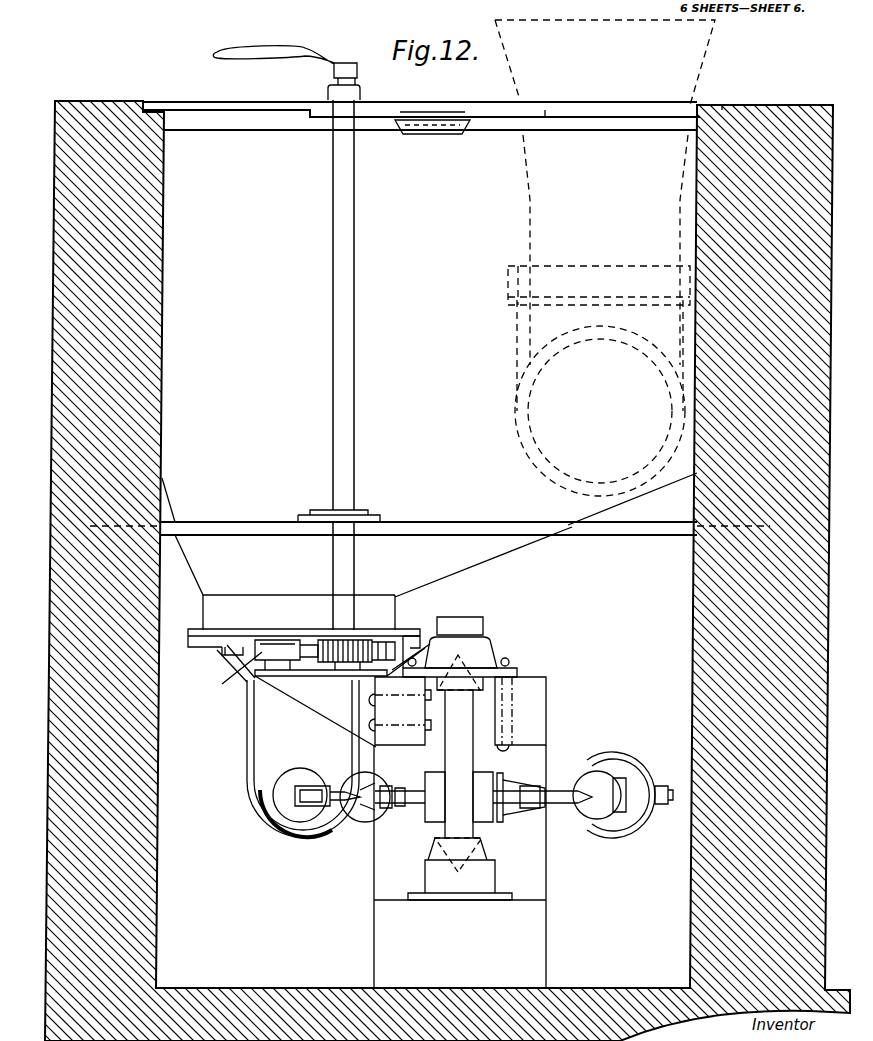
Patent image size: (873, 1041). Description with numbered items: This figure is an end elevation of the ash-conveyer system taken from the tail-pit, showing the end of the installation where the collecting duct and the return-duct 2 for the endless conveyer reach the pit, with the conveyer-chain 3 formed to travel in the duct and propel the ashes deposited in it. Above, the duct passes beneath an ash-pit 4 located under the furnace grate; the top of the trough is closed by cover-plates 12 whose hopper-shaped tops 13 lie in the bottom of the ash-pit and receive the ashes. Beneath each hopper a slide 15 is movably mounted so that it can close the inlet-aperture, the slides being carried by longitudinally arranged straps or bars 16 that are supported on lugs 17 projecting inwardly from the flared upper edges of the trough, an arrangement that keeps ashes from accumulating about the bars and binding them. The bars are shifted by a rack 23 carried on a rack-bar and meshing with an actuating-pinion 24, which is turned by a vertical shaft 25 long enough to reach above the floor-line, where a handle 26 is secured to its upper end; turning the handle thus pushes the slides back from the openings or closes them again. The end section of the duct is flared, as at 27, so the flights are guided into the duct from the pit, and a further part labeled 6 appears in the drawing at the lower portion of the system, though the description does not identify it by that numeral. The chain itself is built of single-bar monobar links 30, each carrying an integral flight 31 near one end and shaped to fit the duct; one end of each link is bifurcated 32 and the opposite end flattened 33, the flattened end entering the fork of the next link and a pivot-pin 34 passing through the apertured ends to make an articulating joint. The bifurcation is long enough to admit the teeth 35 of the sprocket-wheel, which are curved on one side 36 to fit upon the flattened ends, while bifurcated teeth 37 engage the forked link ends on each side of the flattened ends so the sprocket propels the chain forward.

The return-duct 2 is at (628, 756).
The conveyer-chain 3 is at (420, 782).
The ash-pit 4 is at (373, 562).
The guide arm 6 is at (356, 740).
The cover-plate 12 is at (404, 632).
The hopper-shaped top 13 is at (297, 612).
The slide 15 is at (240, 640).
The slide-carrying strap or bar 16 is at (210, 658).
The lug 17 is at (386, 672).
The rack 23 is at (322, 665).
The actuating-pinion 24 is at (245, 672).
The vertical shaft 25 is at (355, 568).
The handle 26 is at (274, 47).
The flared end section 27 is at (306, 828).
The link 30 is at (548, 810).
The flight 31 is at (530, 808).
The bifurcated end 32 is at (562, 773).
The flattened end 33 is at (534, 790).
The pivot-pin 34 is at (658, 768).
The sprocket-wheel tooth 35 is at (548, 815).
The curved side of tooth 36 is at (432, 836).
The bifurcated tooth 37 is at (510, 814).